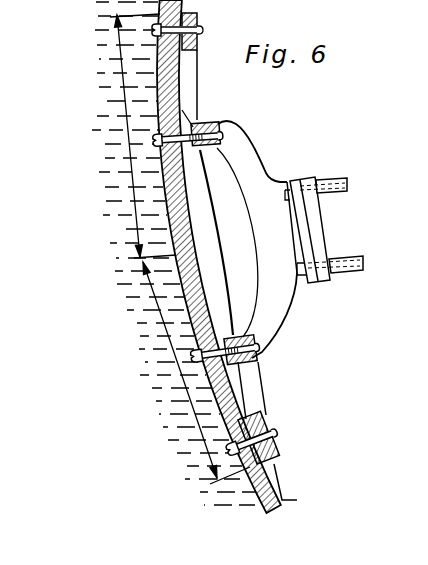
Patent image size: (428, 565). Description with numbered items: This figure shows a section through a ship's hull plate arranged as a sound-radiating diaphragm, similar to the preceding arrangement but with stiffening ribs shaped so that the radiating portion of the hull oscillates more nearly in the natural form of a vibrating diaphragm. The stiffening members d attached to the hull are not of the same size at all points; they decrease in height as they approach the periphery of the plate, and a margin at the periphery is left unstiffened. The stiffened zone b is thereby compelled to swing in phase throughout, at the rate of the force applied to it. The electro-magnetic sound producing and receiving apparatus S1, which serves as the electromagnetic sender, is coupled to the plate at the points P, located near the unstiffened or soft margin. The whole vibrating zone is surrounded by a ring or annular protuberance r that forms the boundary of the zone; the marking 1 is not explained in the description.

The ring or annular protuberance r is at (200, 17).
The coupling points P is at (223, 123).
The stiffened zone b is at (133, 157).
The stiffening members d is at (229, 242).
The electro-magnetic sound producing and receiving apparatus S1 is at (313, 232).
The sheet numeral 1 is at (420, 263).